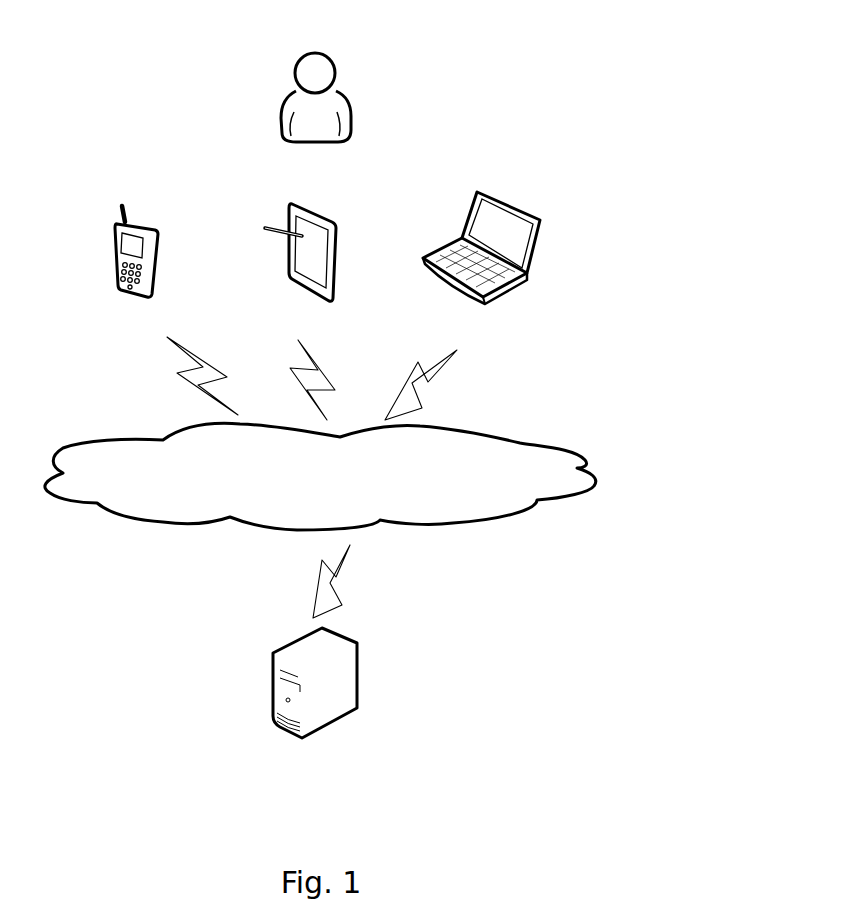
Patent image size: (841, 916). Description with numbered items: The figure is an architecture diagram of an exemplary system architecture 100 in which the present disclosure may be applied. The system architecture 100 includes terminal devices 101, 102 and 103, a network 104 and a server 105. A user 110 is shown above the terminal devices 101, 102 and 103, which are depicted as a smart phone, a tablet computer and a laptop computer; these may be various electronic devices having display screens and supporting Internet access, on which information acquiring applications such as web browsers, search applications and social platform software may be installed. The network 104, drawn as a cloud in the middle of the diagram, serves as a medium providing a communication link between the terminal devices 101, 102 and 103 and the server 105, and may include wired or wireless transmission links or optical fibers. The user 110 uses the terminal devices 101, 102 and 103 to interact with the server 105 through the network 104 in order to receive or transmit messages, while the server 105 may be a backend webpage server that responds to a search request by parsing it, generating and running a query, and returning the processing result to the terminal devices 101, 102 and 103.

The system architecture 100 is at (511, 40).
The user 110 is at (316, 115).
The terminal device 101 is at (136, 270).
The terminal device 102 is at (301, 269).
The terminal device 103 is at (481, 263).
The network 104 is at (320, 476).
The server 105 is at (315, 705).